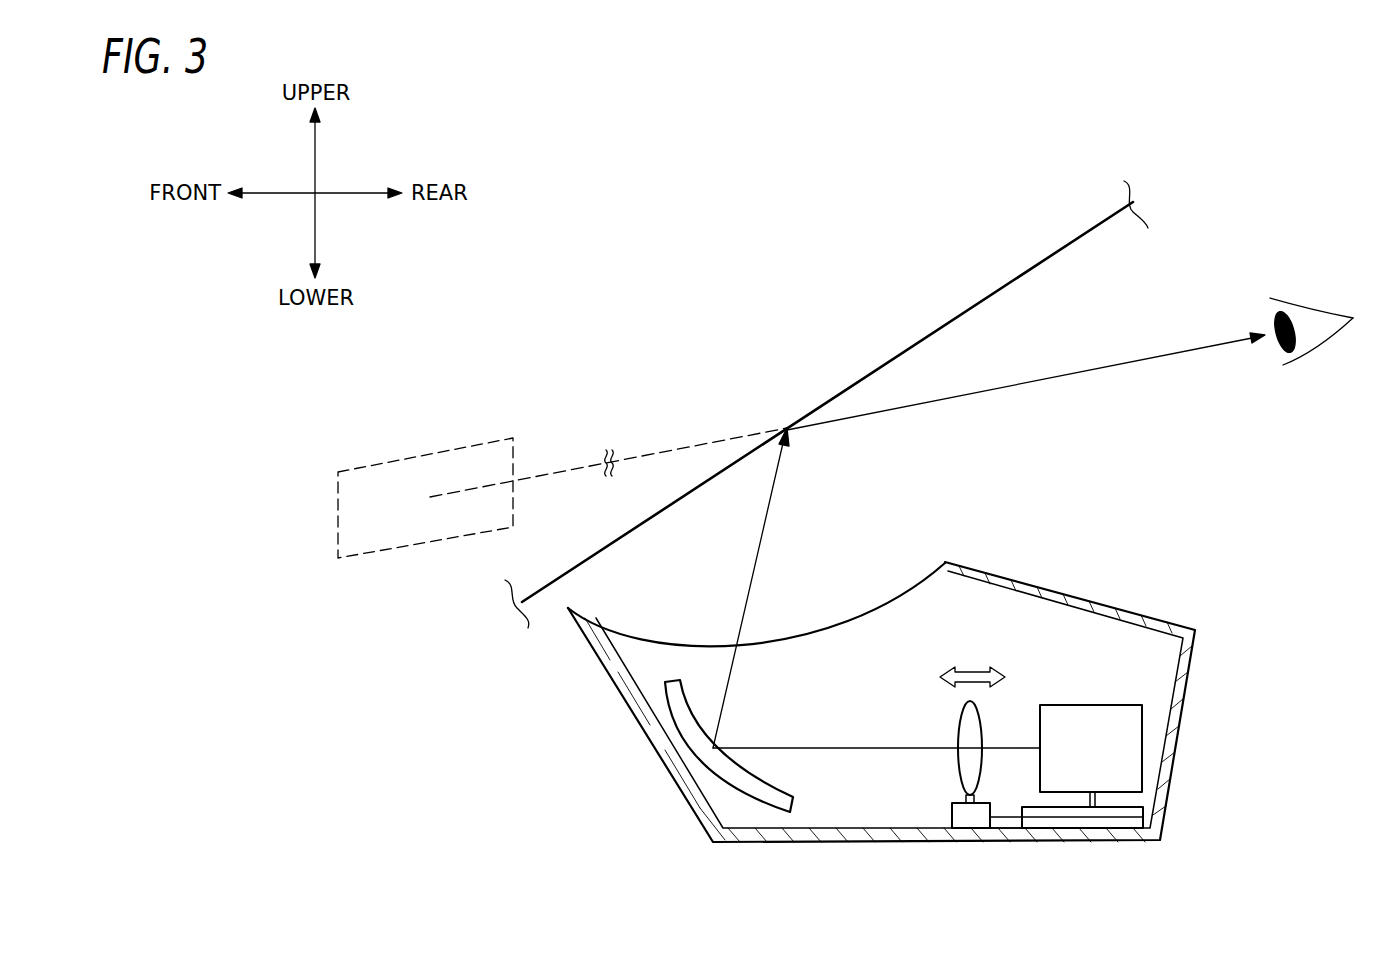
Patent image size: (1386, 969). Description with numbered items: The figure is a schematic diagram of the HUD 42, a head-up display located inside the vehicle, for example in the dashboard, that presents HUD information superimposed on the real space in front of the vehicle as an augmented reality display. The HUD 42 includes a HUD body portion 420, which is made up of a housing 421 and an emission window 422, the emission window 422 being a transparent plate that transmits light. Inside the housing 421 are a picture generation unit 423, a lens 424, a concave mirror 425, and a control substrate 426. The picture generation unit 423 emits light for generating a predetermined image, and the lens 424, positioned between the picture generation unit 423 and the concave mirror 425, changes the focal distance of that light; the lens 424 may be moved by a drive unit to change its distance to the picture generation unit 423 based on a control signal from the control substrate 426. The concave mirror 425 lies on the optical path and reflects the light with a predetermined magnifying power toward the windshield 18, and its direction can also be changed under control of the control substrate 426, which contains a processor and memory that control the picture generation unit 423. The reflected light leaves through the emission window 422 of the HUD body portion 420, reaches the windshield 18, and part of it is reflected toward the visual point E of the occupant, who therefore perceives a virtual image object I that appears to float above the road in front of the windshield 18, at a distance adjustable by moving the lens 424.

The windshield 18 is at (1033, 267).
The visual point E is at (1305, 307).
The virtual image object I is at (447, 450).
The HUD 42 is at (1278, 594).
The HUD body portion 420 is at (1187, 693).
The housing 421 is at (1008, 837).
The emission window 422 is at (858, 625).
The picture generation unit 423 is at (1143, 743).
The lens 424 is at (960, 773).
The concave mirror 425 is at (685, 731).
The control substrate 426 is at (1100, 822).